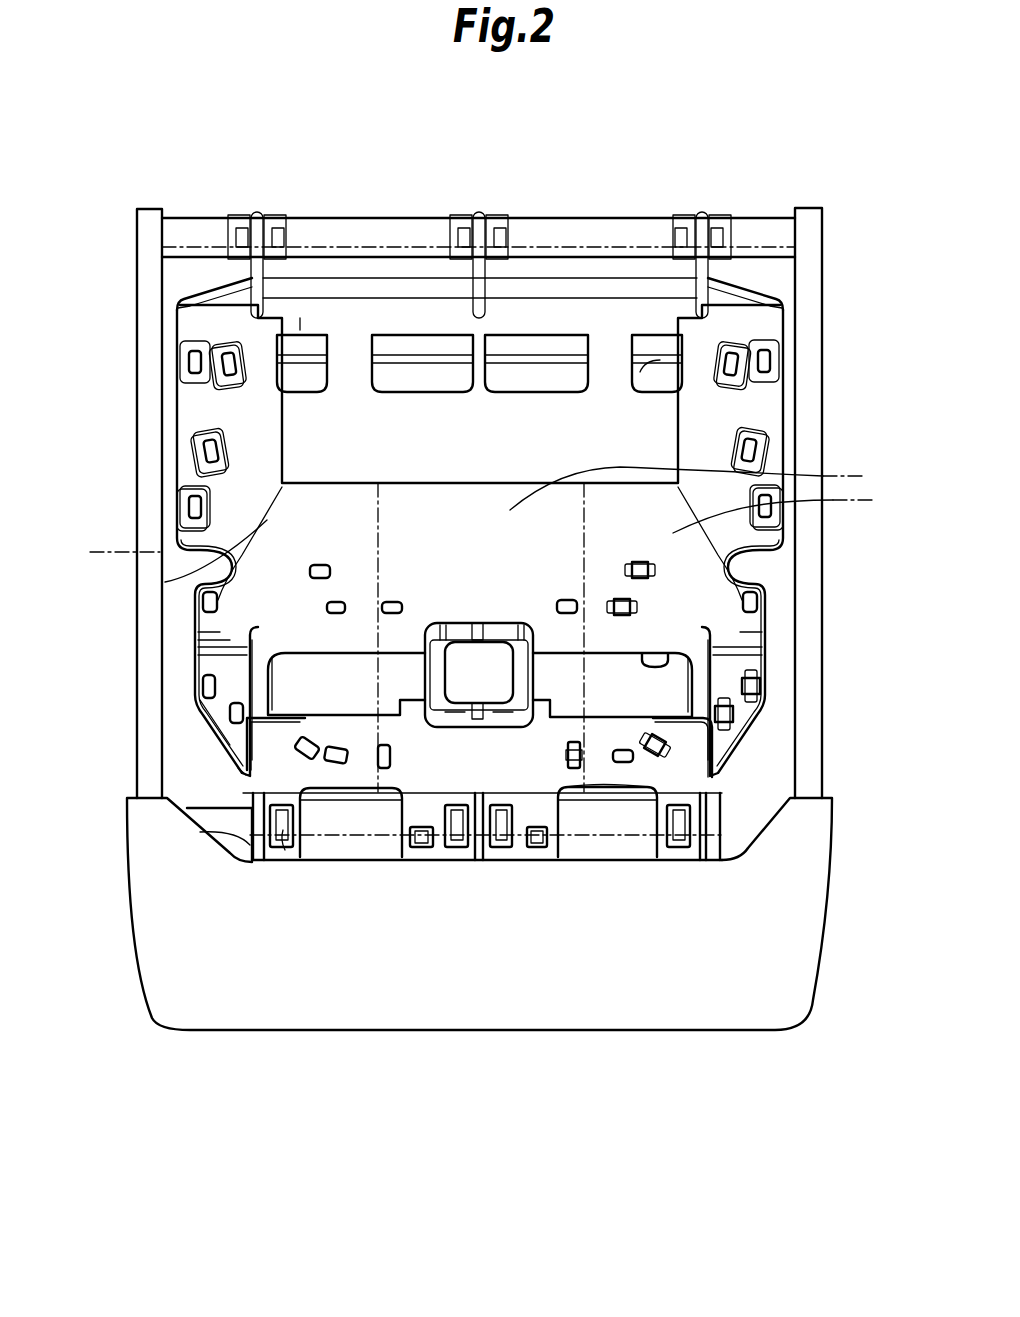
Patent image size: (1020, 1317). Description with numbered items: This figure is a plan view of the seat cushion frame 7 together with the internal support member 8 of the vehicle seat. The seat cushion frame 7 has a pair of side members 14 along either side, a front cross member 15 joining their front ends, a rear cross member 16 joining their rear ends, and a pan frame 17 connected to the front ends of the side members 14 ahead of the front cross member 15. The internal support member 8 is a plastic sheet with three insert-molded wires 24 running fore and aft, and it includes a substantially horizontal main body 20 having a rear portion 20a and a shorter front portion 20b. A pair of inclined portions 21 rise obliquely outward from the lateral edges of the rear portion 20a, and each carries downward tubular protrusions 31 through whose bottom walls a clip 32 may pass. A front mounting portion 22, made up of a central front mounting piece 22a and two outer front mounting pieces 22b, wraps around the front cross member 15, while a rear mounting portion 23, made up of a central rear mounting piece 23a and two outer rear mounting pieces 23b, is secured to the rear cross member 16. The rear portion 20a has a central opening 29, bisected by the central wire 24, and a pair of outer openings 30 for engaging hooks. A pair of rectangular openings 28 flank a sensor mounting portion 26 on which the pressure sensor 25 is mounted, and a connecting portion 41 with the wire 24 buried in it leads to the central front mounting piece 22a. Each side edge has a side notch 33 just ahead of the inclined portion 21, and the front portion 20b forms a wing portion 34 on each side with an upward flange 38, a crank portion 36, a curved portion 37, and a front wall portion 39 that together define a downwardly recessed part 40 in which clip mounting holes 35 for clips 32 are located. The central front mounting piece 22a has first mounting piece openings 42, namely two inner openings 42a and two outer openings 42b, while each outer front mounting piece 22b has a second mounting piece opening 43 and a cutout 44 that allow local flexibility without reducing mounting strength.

The seat cushion frame 7 is at (476, 478).
The internal support member 8 is at (475, 468).
The side members 14 is at (135, 512).
The front cross member 15 is at (750, 810).
The rear cross member 16 is at (765, 228).
The pan frame 17 is at (807, 962).
The main body 20 is at (521, 480).
The rear portion 20a is at (305, 312).
The front portion 20b is at (212, 729).
The inclined portions 21 is at (190, 405).
The front mounting portion 22 is at (471, 954).
The central front mounting piece 22a is at (566, 954).
The outer front mounting pieces 22b is at (471, 955).
The rear mounting portion 23 is at (464, 224).
The central rear mounting piece 23a is at (462, 213).
The outer rear mounting pieces 23b is at (240, 213).
The wires 24 is at (260, 863).
The pressure sensor 25 is at (470, 653).
The sensor mounting portion 26 is at (479, 639).
The rectangular openings 28 is at (268, 680).
The central opening 29 is at (490, 380).
The outer openings 30 is at (637, 377).
The tubular protrusions 31 is at (187, 362).
The clip 32 is at (620, 600).
The side notch 33 is at (200, 558).
The wing portion 34 is at (470, 642).
The clip mounting holes 35 is at (327, 605).
The crank portion 36 is at (220, 638).
The curved portion 37 is at (250, 668).
The flange 38 is at (200, 718).
The front wall portion 39 is at (240, 768).
The recessed part 40 is at (746, 662).
The connecting portion 41 is at (527, 782).
The first mounting piece openings 42 is at (438, 985).
The inner openings 42a is at (455, 848).
The outer openings 42b is at (420, 848).
The second mounting piece opening 43 is at (283, 850).
The cutout 44 is at (240, 840).